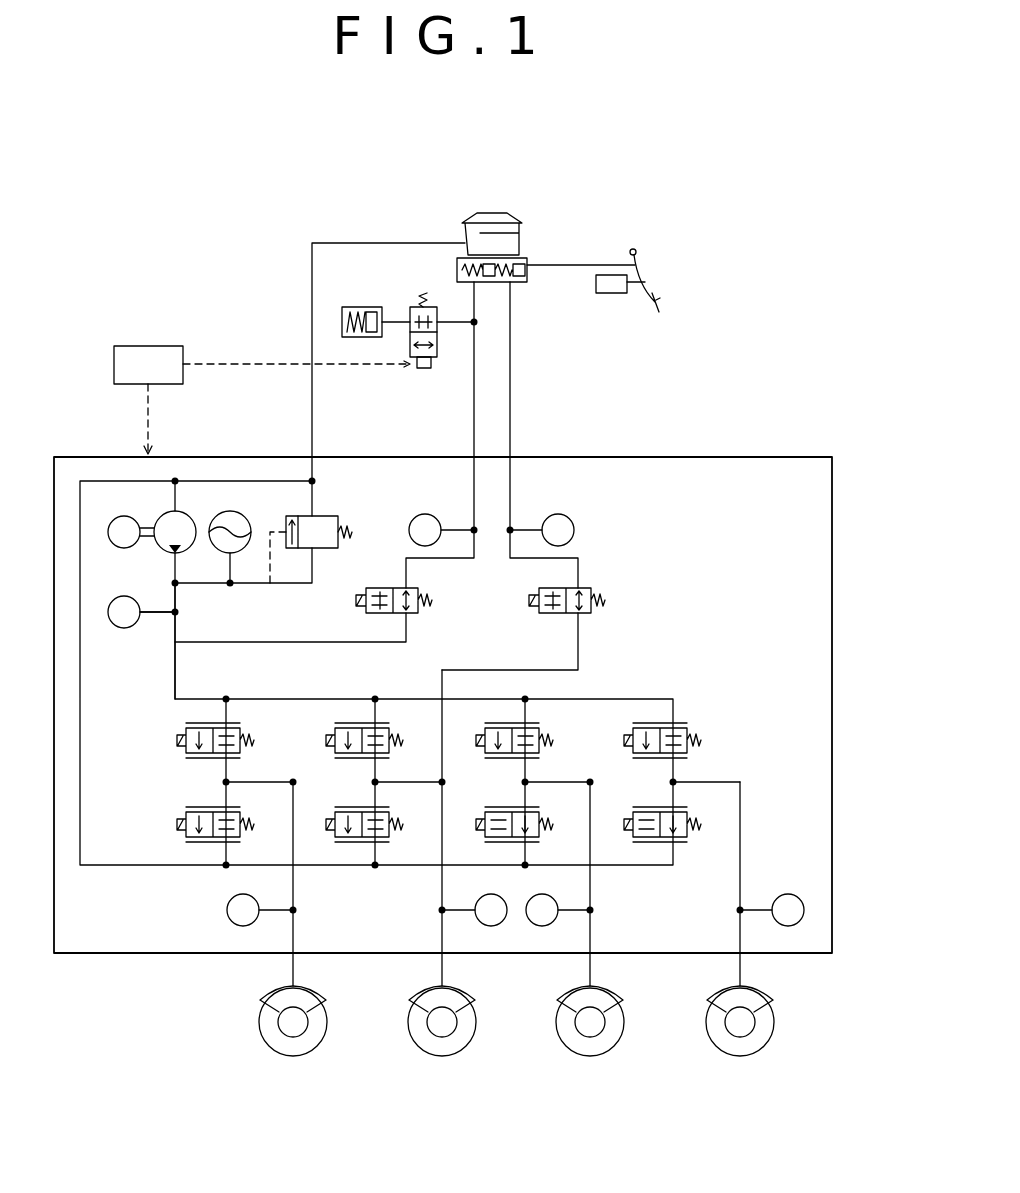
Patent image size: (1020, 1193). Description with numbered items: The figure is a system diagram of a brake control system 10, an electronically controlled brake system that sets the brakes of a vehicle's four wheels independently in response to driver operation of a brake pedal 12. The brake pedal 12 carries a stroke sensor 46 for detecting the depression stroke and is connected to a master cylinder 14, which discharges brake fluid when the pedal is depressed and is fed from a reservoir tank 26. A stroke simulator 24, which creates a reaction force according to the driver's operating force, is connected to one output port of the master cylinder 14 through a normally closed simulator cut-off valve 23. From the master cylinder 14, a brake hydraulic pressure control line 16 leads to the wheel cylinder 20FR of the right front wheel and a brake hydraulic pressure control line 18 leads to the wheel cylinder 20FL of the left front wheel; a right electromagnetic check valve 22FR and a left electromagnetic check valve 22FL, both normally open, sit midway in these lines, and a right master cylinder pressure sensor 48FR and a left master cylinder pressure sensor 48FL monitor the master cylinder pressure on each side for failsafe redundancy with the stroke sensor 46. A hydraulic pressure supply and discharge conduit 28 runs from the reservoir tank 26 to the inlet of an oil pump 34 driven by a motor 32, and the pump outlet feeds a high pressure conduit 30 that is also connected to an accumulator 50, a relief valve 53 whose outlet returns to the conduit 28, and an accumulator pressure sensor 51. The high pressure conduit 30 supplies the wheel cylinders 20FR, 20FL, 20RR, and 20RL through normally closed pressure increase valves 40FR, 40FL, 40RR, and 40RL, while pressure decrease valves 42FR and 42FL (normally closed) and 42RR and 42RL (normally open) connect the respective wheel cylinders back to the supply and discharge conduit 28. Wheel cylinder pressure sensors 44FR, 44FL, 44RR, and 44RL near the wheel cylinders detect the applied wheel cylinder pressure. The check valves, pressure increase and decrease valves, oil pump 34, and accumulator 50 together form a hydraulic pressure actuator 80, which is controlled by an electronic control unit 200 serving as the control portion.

The brake control system 10 is at (231, 238).
The brake pedal 12 is at (658, 309).
The master cylinder 14 is at (526, 284).
The brake hydraulic pressure control line 16 is at (465, 563).
The brake hydraulic pressure control line 18 is at (513, 563).
The wheel cylinder 20FR is at (276, 993).
The wheel cylinder 20FL is at (425, 993).
The wheel cylinder 20RL is at (573, 993).
The wheel cylinder 20RR is at (723, 993).
The right electromagnetic check valve 22FR is at (355, 601).
The left electromagnetic check valve 22FL is at (610, 601).
The simulator cut-off valve 23 is at (437, 362).
The stroke simulator 24 is at (362, 306).
The reservoir tank 26 is at (492, 211).
The hydraulic pressure supply and discharge conduit 28 is at (400, 243).
The high pressure conduit 30 is at (183, 606).
The motor 32 is at (135, 517).
The oil pump 34 is at (193, 514).
The stroke sensor 46 is at (612, 293).
The right master cylinder pressure sensor 48FR is at (425, 513).
The left master cylinder pressure sensor 48FL is at (558, 513).
The accumulator 50 is at (249, 514).
The accumulator pressure sensor 51 is at (122, 630).
The relief valve 53 is at (322, 514).
The pressure increase valve 40FR is at (176, 741).
The pressure increase valve 40FL is at (366, 723).
The pressure increase valve 40RL is at (539, 732).
The pressure increase valve 40RR is at (680, 723).
The pressure decrease valve 42FR is at (176, 825).
The pressure decrease valve 42FL is at (366, 843).
The pressure decrease valve 42RL is at (500, 808).
The pressure decrease valve 42RR is at (681, 843).
The wheel cylinder pressure sensor 44FR is at (226, 911).
The wheel cylinder pressure sensor 44FL is at (487, 927).
The wheel cylinder pressure sensor 44RL is at (547, 926).
The wheel cylinder pressure sensor 44RR is at (789, 893).
The hydraulic pressure actuator 80 is at (741, 455).
The electronic control unit 200 is at (148, 344).